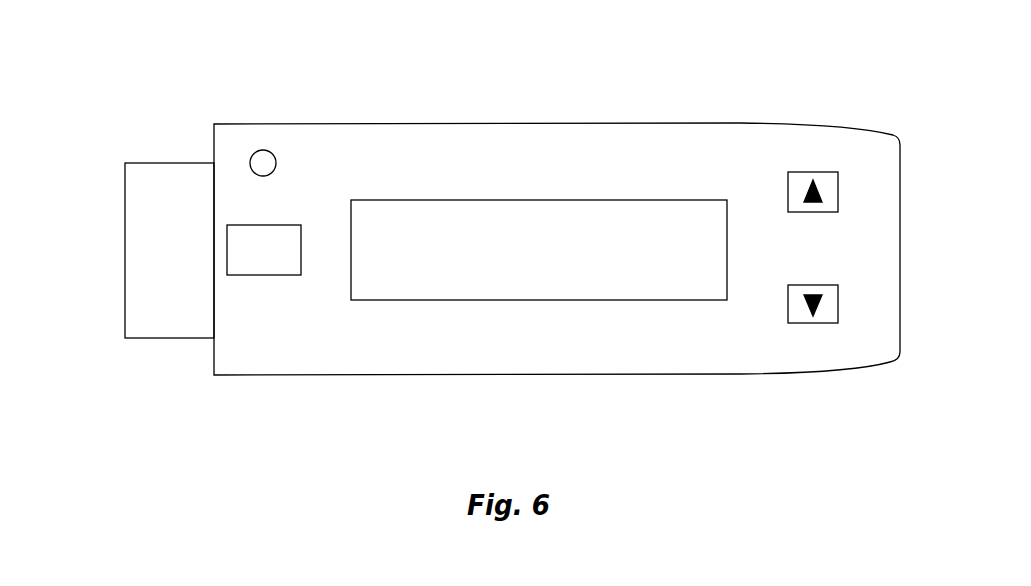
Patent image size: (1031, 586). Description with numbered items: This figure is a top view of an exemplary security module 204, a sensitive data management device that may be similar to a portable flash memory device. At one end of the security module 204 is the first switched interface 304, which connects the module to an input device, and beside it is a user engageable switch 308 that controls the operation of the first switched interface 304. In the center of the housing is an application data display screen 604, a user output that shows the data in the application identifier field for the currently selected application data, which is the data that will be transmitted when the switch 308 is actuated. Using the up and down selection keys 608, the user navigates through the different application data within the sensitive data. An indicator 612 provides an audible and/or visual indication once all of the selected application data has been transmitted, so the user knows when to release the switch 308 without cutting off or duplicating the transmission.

The security module 204 is at (915, 78).
The first switched interface 304 is at (164, 338).
The user engageable switch 308 is at (250, 275).
The application data display screen 604 is at (525, 200).
The selection keys 608 is at (838, 297).
The indicator 612 is at (263, 150).